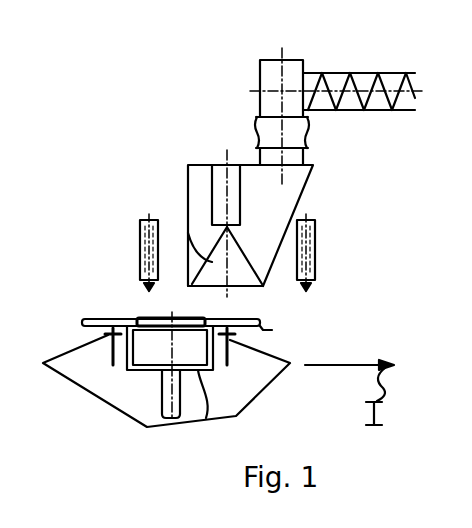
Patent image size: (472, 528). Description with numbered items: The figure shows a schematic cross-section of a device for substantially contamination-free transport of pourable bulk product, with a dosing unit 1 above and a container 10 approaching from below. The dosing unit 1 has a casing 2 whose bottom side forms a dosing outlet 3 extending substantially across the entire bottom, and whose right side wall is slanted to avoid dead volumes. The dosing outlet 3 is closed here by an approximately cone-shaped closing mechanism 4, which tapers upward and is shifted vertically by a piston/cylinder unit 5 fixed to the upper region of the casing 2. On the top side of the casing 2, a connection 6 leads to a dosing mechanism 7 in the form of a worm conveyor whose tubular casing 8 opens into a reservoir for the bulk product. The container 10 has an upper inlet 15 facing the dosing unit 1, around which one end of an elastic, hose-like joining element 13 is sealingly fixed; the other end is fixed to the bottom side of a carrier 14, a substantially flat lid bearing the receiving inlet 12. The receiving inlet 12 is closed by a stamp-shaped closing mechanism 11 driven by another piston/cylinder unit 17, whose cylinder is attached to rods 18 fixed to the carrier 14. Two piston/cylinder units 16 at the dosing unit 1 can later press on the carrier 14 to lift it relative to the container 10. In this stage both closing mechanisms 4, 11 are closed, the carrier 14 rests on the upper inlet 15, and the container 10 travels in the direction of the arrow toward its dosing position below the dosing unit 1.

The dosing unit 1 is at (190, 150).
The casing 2 is at (188, 188).
The dosing outlet 3 is at (266, 287).
The closing mechanism 4 is at (186, 228).
The piston/cylinder unit 5 is at (239, 189).
The connection 6 is at (300, 153).
The dosing mechanism 7 is at (340, 73).
The tubular casing 8 is at (385, 73).
The container 10 is at (283, 397).
The closing mechanism 11 is at (150, 319).
The receiving inlet 12 is at (142, 322).
The elastic joining element 13 is at (232, 350).
The carrier 14 is at (267, 326).
The upper inlet 15 is at (105, 337).
The piston/cylinder units 16 is at (140, 242).
The piston/cylinder unit 17 is at (158, 395).
The rods 18 is at (206, 418).